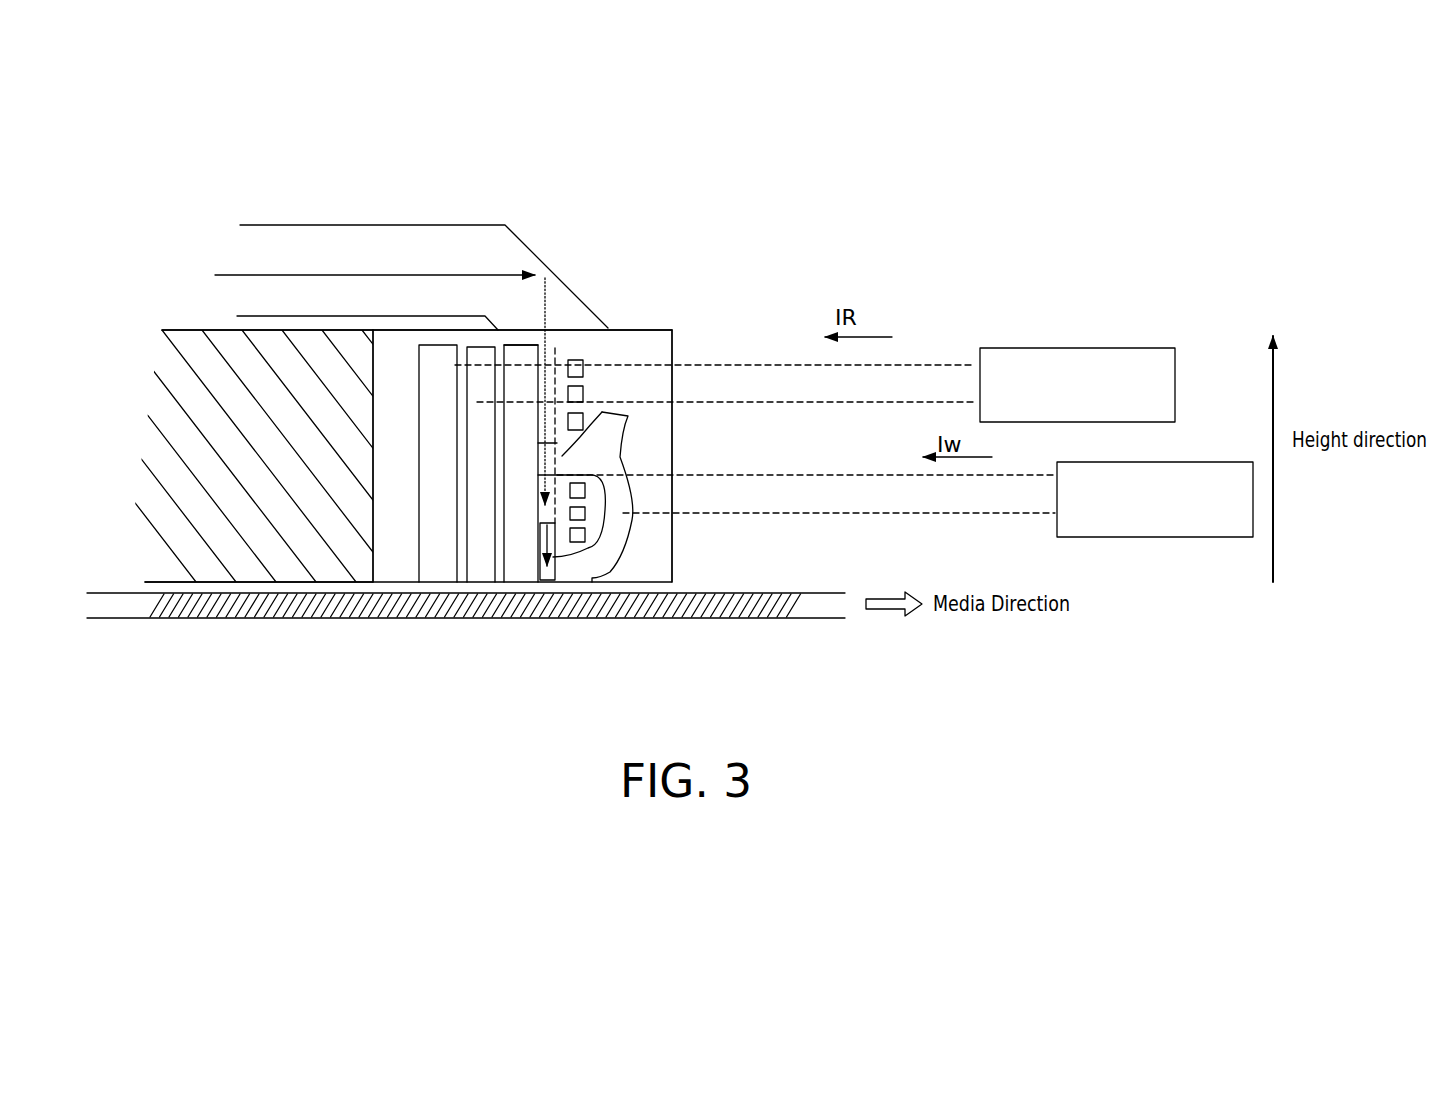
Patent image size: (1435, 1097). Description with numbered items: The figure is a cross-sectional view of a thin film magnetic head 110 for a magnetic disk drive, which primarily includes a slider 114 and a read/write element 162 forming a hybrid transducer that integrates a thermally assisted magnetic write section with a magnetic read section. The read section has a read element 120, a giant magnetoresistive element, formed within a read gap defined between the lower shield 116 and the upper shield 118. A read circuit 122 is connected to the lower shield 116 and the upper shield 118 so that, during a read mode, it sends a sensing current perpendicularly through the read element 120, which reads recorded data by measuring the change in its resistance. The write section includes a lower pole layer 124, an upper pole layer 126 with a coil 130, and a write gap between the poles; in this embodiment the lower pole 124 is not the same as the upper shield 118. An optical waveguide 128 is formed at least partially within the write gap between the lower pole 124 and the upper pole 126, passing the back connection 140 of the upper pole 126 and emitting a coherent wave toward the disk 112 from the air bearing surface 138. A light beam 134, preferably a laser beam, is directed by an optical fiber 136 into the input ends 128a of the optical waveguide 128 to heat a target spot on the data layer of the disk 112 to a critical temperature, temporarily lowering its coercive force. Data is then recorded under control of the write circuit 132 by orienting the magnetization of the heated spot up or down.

The thin film magnetic head 110 is at (565, 150).
The disk 112 is at (420, 558).
The slider 114 is at (247, 570).
The lower shield 116 is at (377, 570).
The upper shield 118 is at (490, 555).
The read element 120 is at (478, 560).
The read circuit 122 is at (1042, 362).
The lower pole layer 124 is at (520, 352).
The upper pole layer 126 is at (617, 538).
The optical waveguide 128 is at (552, 558).
The input ends 128a is at (548, 350).
The coil 130 is at (577, 358).
The write circuit 132 is at (1157, 527).
The light beam 134 is at (393, 275).
The optical fiber 136 is at (287, 242).
The air bearing surface 138 is at (653, 582).
The back connection 140 is at (562, 456).
The read/write element 162 is at (670, 236).